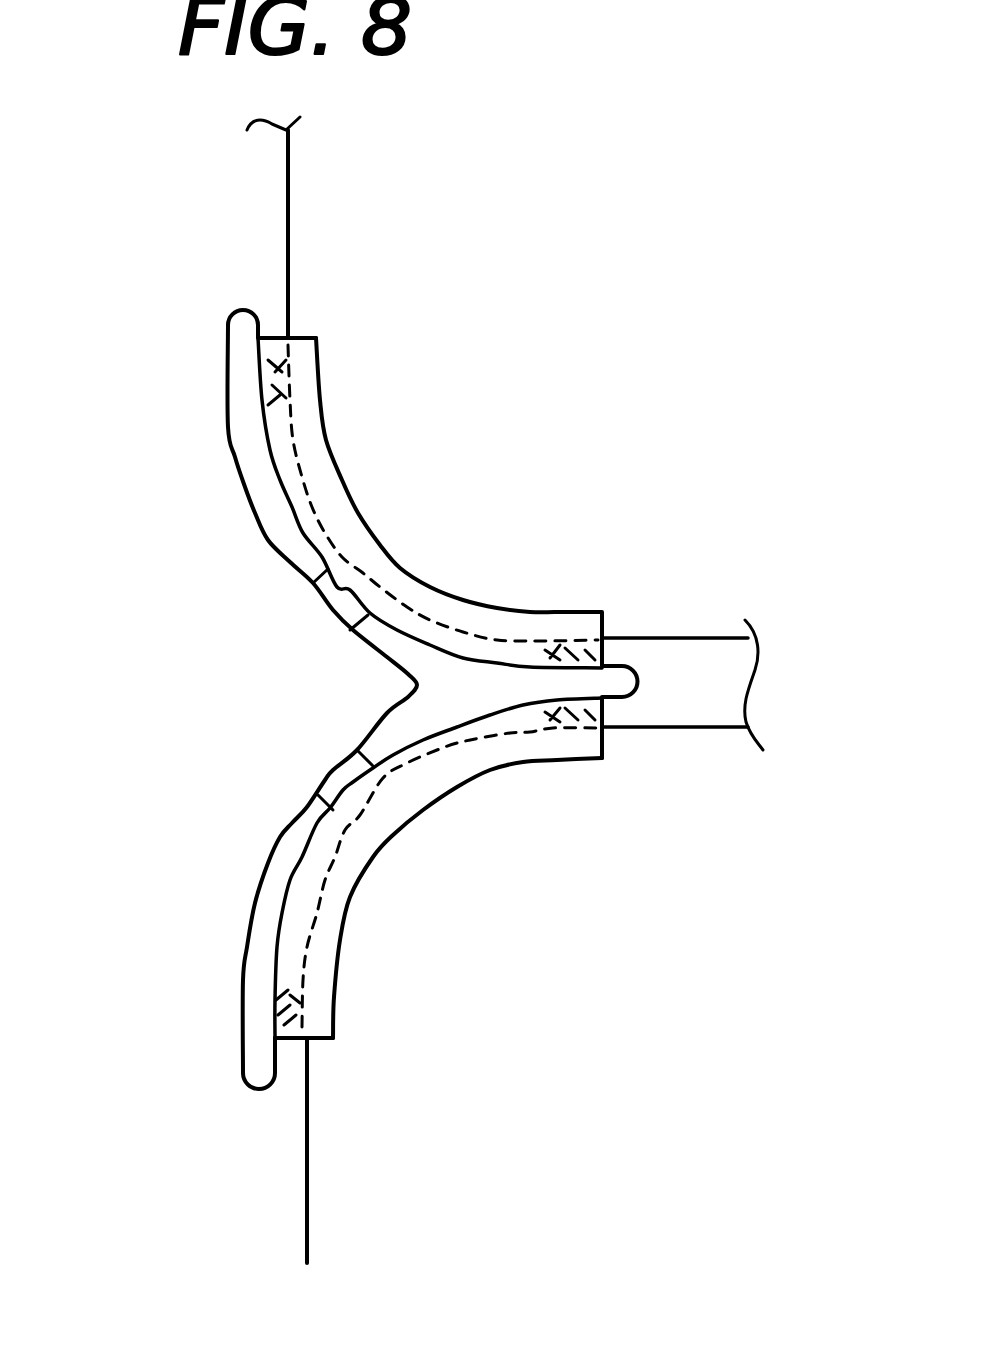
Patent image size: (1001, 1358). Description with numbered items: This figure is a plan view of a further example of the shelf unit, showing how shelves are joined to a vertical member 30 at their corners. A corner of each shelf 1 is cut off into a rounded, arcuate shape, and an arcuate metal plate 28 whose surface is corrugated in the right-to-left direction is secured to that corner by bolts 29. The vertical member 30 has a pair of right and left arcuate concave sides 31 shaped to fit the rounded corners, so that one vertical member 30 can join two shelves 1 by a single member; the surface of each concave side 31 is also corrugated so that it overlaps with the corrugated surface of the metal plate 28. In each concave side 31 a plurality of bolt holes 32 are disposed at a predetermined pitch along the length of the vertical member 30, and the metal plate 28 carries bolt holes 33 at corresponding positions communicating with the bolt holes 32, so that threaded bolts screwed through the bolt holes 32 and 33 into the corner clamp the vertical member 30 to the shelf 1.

The shelf 1 is at (283, 263).
The arcuate metal plate 28 is at (423, 573).
The bolt 29 is at (276, 391).
The vertical member 30 is at (226, 408).
The concave side 31 is at (290, 510).
The bolt hole 32 is at (337, 605).
The bolt hole 33 is at (323, 560).